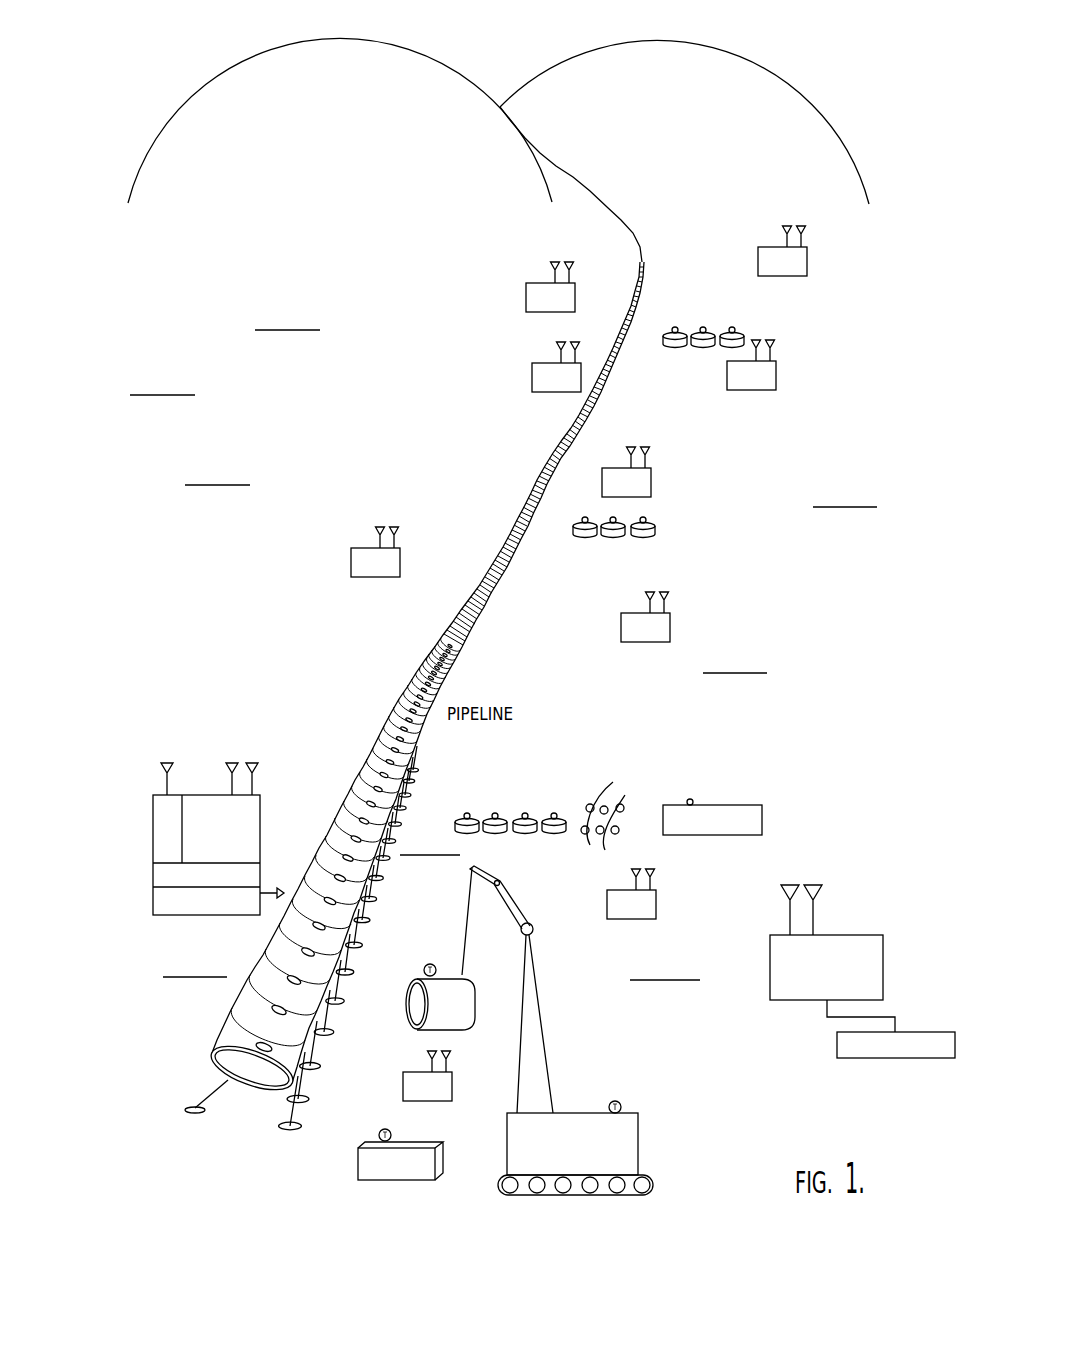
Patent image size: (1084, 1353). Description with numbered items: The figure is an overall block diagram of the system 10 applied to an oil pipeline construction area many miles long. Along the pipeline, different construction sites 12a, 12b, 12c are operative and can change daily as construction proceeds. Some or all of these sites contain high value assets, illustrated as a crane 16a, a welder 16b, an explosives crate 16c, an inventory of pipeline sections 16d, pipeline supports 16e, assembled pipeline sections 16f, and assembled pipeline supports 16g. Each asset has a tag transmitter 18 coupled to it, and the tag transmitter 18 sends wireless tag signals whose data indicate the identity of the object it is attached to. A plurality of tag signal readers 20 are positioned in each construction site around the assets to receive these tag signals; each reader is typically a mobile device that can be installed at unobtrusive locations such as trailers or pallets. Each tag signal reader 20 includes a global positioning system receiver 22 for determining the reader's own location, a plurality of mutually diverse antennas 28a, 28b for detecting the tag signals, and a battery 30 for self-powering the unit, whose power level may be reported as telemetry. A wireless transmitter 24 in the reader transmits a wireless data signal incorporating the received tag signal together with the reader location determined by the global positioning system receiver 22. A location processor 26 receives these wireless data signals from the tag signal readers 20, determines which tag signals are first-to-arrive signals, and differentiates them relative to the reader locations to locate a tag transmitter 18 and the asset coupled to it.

The system 10 is at (835, 473).
The construction site 12a is at (714, 302).
The construction site 12b is at (616, 576).
The construction site 12c is at (277, 1170).
The crane 16a is at (638, 1140).
The welder 16b is at (410, 1180).
The explosives crate 16c is at (762, 822).
The inventory of pipeline sections 16d is at (673, 346).
The pipeline supports 16e is at (603, 832).
The assembled pipeline sections 16f is at (232, 1030).
The assembled pipeline supports 16g is at (193, 1092).
The tag transmitter 18 is at (643, 511).
The tag signal reader 20 is at (526, 297).
The global positioning system receiver 22 is at (172, 792).
The wireless transmitter 24 is at (197, 915).
The location processor 26 is at (883, 962).
The antenna 28a is at (234, 775).
The antenna 28b is at (254, 766).
The battery 30 is at (260, 873).